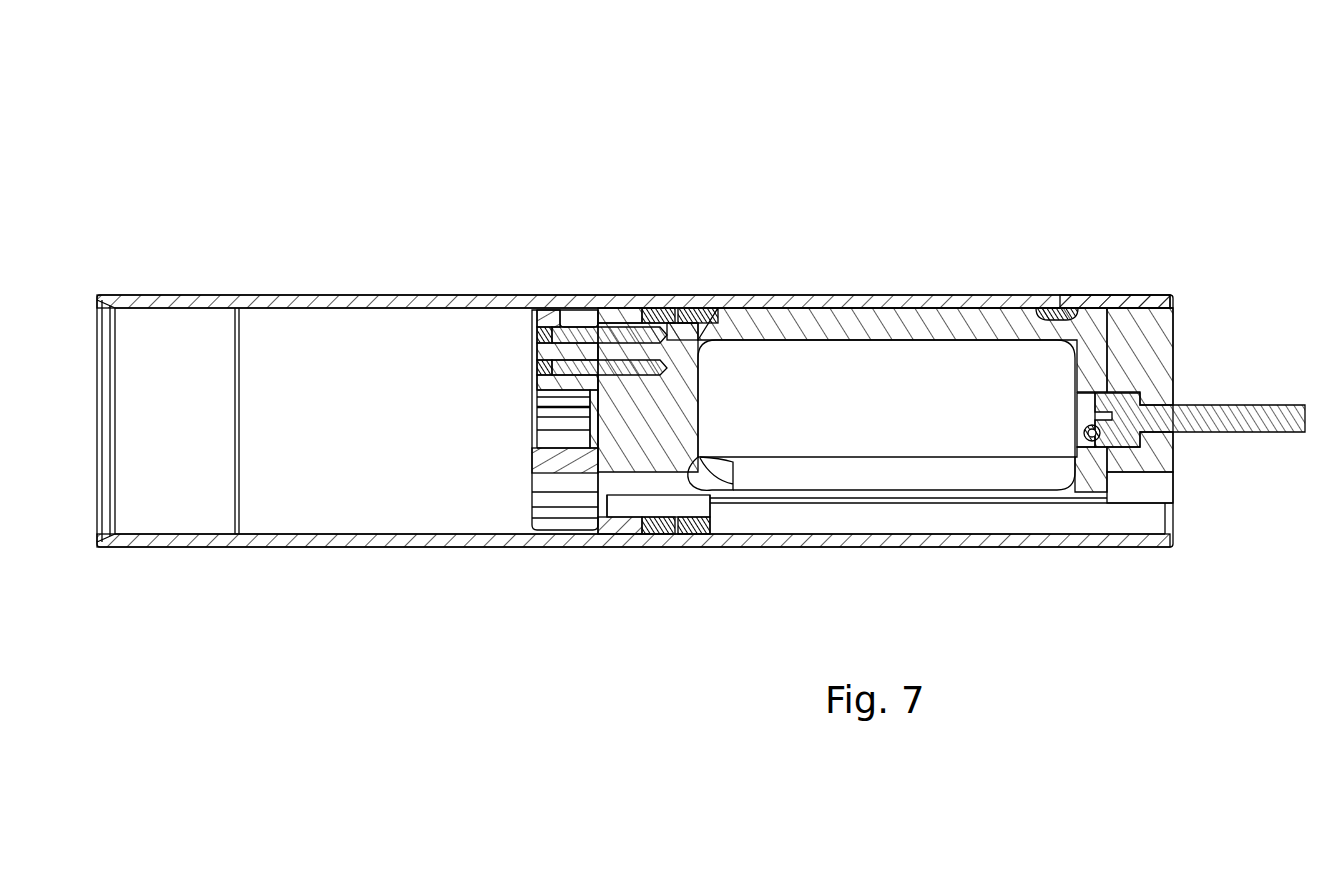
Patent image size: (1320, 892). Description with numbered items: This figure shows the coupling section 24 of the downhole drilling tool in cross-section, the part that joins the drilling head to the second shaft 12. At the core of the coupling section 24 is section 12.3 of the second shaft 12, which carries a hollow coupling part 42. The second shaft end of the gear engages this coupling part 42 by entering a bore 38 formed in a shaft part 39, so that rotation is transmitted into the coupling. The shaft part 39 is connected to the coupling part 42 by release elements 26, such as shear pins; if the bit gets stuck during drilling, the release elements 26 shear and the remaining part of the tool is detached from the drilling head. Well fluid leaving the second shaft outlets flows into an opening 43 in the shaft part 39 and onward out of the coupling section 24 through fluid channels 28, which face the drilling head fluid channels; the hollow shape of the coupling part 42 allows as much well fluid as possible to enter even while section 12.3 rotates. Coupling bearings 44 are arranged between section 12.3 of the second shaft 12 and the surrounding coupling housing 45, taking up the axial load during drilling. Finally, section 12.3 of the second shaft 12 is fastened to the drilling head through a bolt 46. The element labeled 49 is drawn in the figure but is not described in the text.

The second shaft 12 is at (1200, 292).
The section of the second shaft 12.3 is at (1150, 330).
The coupling section 24 is at (1102, 108).
The release element 26 is at (1103, 450).
The fluid channel 28 is at (1032, 518).
The bore 38 is at (567, 310).
The shaft part 39 is at (582, 312).
The coupling part 42 is at (802, 325).
The opening 43 is at (575, 502).
The coupling bearing 44 is at (701, 315).
The coupling housing 45 is at (906, 300).
The bolt 46 is at (1094, 425).
The recess 49 is at (655, 322).